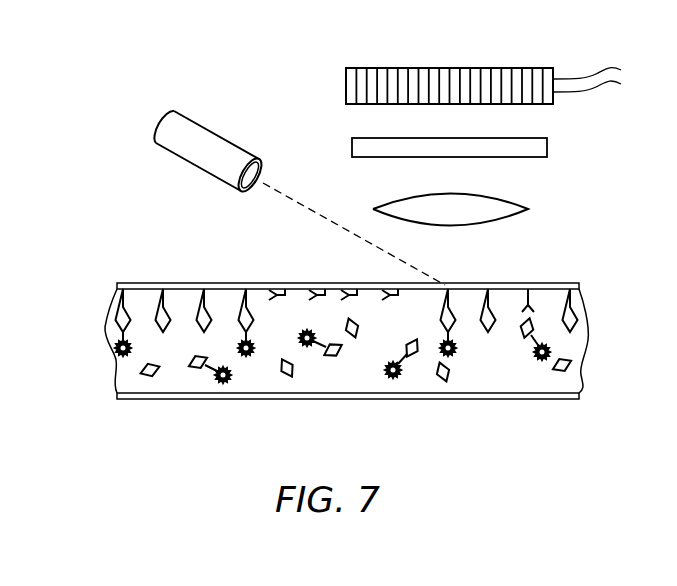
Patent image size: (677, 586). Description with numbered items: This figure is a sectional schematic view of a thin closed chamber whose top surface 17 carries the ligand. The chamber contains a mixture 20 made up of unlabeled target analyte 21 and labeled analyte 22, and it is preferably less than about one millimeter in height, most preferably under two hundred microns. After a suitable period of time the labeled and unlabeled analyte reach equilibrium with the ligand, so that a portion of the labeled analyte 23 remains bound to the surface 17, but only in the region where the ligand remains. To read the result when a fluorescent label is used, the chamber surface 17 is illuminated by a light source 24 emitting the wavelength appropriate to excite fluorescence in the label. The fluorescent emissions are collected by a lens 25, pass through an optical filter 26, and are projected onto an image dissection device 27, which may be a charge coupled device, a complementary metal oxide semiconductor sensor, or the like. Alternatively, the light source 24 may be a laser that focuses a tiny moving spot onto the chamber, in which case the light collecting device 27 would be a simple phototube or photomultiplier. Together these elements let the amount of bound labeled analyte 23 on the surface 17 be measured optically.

The surface 17 is at (133, 283).
The mixture 20 is at (130, 382).
The unlabeled target analyte 21 is at (278, 374).
The labeled analyte 22 is at (324, 362).
The bound labeled analyte 23 is at (455, 330).
The light source 24 is at (228, 143).
The lens 25 is at (528, 209).
The optical filter 26 is at (547, 147).
The image dissection device 27 is at (525, 67).